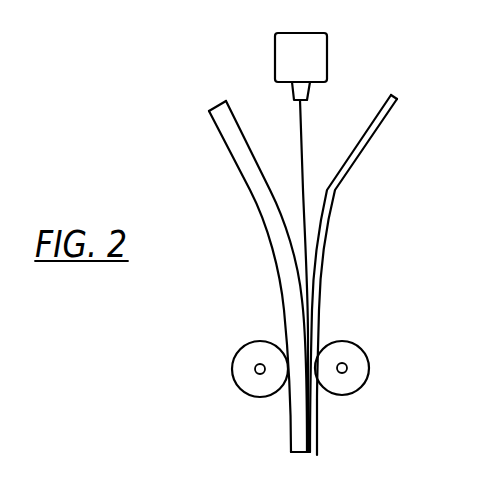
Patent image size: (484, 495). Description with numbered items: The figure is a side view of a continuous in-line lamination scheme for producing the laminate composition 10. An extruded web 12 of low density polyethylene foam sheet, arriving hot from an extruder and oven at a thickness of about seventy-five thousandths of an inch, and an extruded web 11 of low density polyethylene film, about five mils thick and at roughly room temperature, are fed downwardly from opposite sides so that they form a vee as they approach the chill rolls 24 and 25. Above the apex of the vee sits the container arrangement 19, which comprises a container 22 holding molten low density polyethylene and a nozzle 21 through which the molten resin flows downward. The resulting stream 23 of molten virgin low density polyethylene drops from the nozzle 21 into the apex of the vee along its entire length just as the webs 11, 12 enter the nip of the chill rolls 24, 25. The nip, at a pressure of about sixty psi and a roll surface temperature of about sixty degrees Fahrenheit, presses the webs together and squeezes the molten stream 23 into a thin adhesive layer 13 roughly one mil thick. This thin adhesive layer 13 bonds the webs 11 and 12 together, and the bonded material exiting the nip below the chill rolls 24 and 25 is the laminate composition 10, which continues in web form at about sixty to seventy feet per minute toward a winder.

The laminate composition 10 is at (279, 430).
The extruded web of low density polyethylene film 11 is at (368, 138).
The extruded web of low density polyethylene foam sheet 12 is at (228, 137).
The thin adhesive layer 13 is at (319, 430).
The container arrangement 19 is at (314, 59).
The nozzle 21 is at (308, 97).
The container 22 is at (275, 55).
The stream of molten low density polyethylene 23 is at (303, 176).
The chill roll 24 is at (350, 347).
The chill roll 25 is at (248, 345).